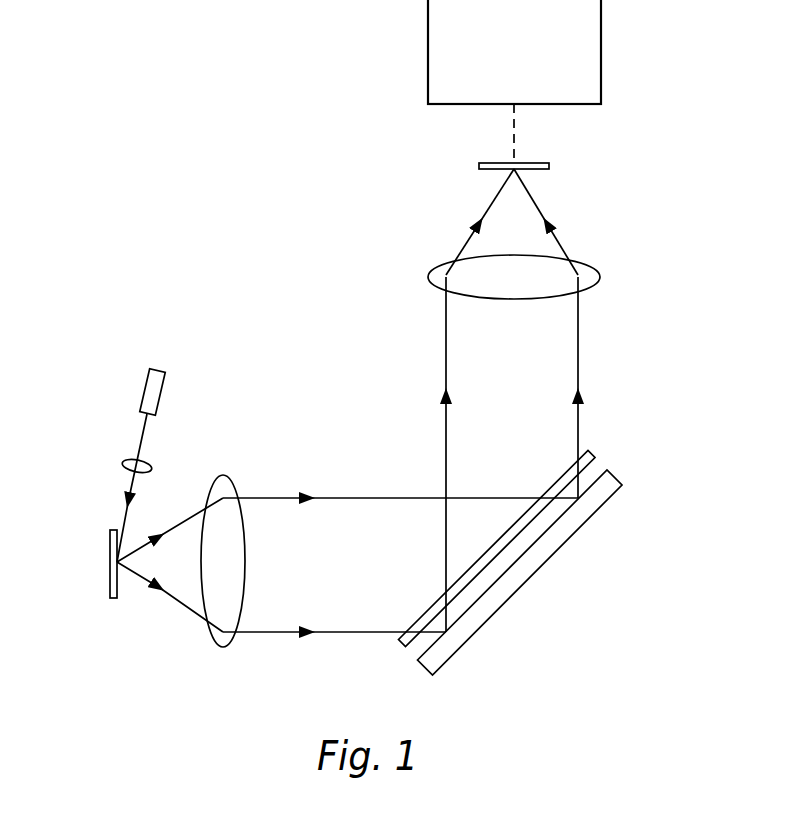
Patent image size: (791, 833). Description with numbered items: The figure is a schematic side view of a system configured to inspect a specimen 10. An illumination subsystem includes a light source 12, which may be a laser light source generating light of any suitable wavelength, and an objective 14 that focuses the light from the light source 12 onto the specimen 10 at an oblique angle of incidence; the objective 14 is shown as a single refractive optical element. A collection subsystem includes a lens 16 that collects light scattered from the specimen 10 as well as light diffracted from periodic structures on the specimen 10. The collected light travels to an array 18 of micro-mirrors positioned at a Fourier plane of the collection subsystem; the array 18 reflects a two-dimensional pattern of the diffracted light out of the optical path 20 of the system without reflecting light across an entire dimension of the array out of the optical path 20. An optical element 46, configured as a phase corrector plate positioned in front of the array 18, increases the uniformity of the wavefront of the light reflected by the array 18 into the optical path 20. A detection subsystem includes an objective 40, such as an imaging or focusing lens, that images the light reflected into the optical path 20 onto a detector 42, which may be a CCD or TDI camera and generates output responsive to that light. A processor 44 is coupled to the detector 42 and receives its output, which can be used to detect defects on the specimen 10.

The specimen 10 is at (72, 547).
The light source 12 is at (145, 387).
The objective 14 is at (96, 449).
The lens 16 is at (256, 543).
The array of micro-mirrors 18 is at (558, 559).
The optical path 20 is at (552, 454).
The objective 40 is at (552, 263).
The detector 42 is at (549, 146).
The processor 44 is at (531, 79).
The optical element 46 is at (534, 531).